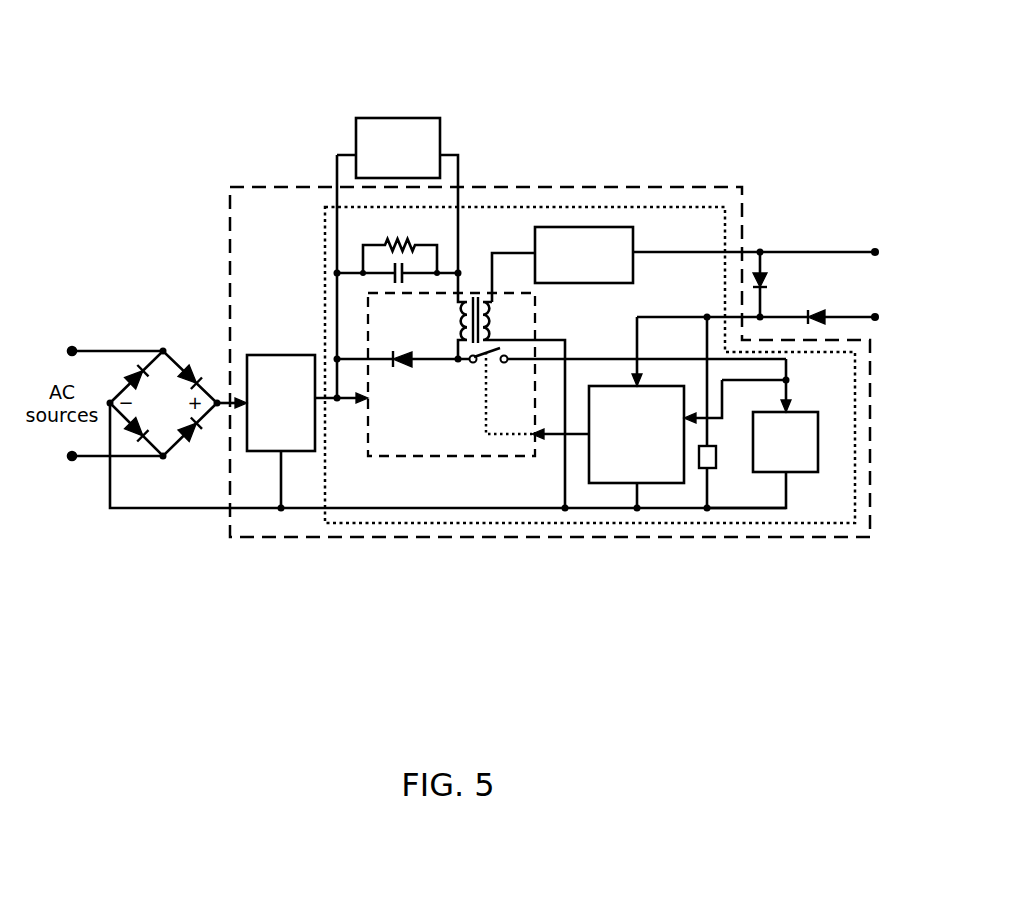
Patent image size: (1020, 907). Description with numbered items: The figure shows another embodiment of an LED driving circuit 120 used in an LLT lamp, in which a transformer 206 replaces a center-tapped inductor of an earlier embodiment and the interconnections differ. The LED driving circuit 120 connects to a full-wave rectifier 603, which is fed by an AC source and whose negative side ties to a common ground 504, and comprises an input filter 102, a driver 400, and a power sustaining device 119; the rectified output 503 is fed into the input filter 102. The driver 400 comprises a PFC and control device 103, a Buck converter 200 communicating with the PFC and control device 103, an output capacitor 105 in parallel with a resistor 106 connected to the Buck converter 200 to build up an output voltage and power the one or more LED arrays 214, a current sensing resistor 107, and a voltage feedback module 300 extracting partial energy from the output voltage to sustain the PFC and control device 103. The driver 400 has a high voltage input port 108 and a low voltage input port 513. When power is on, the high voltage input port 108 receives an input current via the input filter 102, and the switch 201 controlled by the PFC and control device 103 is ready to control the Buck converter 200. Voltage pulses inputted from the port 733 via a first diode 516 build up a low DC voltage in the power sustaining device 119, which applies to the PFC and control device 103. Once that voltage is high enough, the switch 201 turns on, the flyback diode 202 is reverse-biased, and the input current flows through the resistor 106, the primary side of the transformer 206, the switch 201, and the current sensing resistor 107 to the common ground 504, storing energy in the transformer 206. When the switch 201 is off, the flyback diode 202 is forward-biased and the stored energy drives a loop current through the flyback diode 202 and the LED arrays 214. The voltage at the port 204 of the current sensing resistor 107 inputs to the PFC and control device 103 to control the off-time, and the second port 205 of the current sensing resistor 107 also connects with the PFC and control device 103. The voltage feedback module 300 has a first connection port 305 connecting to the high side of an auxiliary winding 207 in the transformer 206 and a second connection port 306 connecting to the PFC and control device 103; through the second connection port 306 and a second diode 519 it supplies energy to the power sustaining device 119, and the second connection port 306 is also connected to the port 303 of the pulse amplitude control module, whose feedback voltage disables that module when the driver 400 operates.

The input filter 102 is at (277, 355).
The PFC and control device 103 is at (648, 483).
The output capacitor 105 is at (399, 284).
The resistor 106 is at (418, 252).
The current sensing resistor 107 is at (818, 472).
The high voltage input port 108 is at (337, 357).
The power sustaining device 119 is at (713, 468).
The LED driving circuit 120 is at (250, 187).
The Buck converter 200 is at (533, 457).
The switch 201 is at (493, 362).
The flyback diode 202 is at (402, 370).
The port of the current sensing resistor 204 is at (790, 380).
The second port of the current sensing resistor 205 is at (773, 512).
The transformer 206 is at (476, 297).
The auxiliary winding 207 is at (492, 312).
The LED arrays 214 is at (392, 119).
The voltage feedback module 300 is at (622, 227).
The port of the pulse amplitude control module 303 is at (873, 250).
The first connection port 305 is at (497, 252).
The second connection port 306 is at (675, 253).
The driver 400 is at (327, 207).
The rectified DC output 503 is at (228, 398).
The common ground 504 is at (110, 403).
The low voltage input port 513 is at (708, 316).
The first diode 516 is at (815, 312).
The second diode 519 is at (762, 285).
The full-wave rectifier 603 is at (127, 368).
The port 733 is at (876, 320).